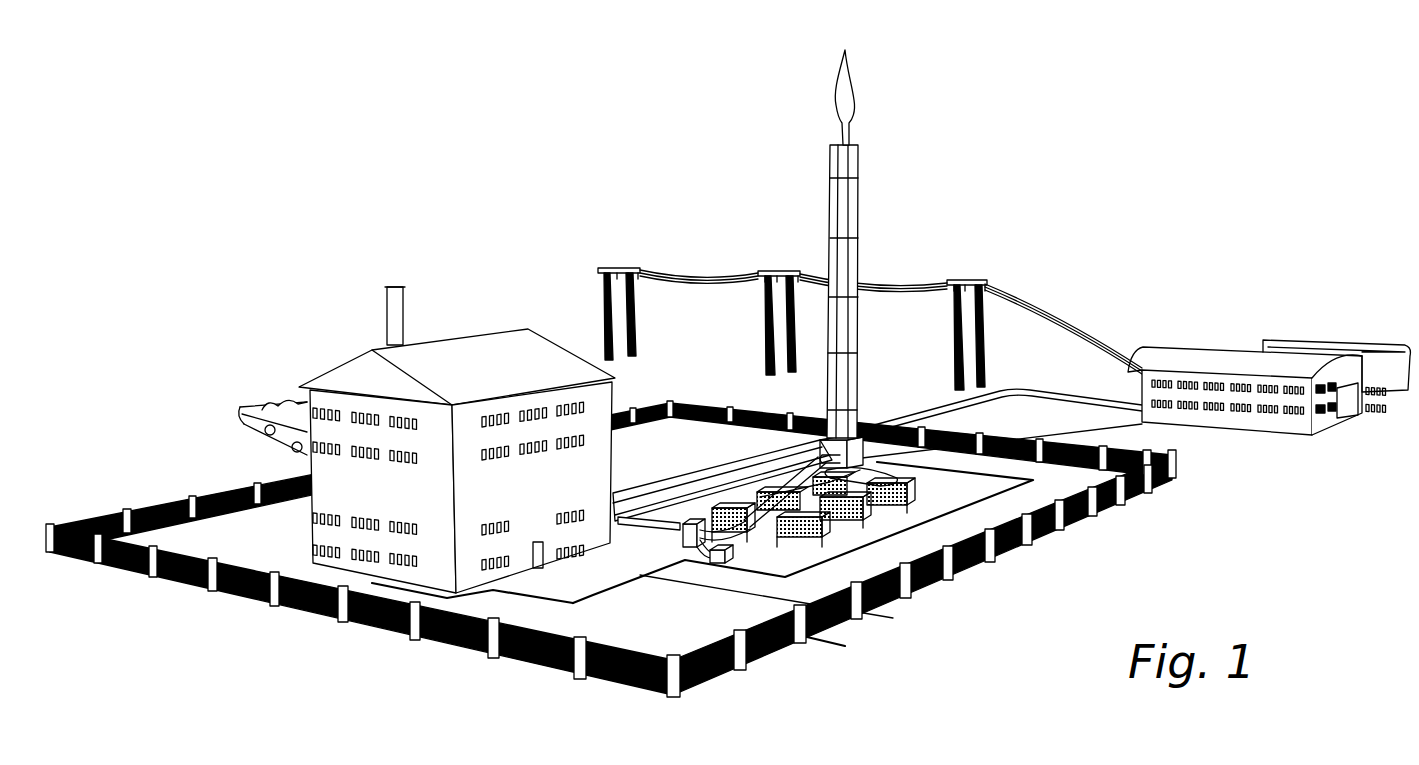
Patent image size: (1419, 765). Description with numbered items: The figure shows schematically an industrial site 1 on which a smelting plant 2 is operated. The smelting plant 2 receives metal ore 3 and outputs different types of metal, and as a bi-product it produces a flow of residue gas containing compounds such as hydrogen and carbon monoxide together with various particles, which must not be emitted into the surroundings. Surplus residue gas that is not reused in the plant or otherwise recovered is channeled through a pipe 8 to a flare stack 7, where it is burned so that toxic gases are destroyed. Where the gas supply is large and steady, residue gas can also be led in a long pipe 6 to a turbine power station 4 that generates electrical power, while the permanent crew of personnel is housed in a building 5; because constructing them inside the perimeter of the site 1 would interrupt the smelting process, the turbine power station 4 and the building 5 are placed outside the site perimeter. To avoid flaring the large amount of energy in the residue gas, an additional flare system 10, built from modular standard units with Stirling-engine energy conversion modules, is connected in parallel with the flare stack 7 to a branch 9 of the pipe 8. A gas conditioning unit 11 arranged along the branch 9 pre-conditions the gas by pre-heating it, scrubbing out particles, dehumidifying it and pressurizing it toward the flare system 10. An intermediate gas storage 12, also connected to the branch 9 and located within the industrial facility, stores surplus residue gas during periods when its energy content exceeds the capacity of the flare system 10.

The industrial site 1 is at (1030, 214).
The smelting plant 2 is at (472, 357).
The metal ore 3 is at (268, 400).
The turbine power station 4 is at (1197, 355).
The building 5 is at (1293, 342).
The pipe 6 is at (1045, 398).
The flare stack 7 is at (845, 200).
The pipe 8 is at (693, 502).
The branch 9 is at (678, 527).
The additional flare system 10 is at (925, 490).
The gas conditioning unit 11 is at (690, 535).
The intermediate gas storage 12 is at (712, 562).